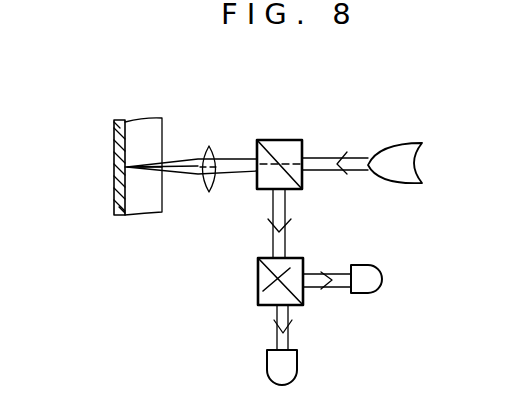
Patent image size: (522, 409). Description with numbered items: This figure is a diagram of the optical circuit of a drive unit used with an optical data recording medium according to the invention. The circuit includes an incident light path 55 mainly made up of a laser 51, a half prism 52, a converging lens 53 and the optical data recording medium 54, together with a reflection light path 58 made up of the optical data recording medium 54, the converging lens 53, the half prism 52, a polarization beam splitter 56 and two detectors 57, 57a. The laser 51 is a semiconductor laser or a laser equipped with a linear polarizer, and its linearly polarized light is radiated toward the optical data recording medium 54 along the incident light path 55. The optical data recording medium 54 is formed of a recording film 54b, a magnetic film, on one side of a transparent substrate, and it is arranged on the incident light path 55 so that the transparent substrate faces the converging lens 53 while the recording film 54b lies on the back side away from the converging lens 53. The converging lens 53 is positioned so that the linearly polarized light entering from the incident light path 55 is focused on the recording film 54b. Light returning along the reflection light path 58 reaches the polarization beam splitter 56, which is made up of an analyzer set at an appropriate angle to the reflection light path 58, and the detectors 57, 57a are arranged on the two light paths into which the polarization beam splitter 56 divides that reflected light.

The laser 51 is at (403, 150).
The half prism 52 is at (283, 140).
The converging lens 53 is at (209, 146).
The optical data recording medium 54 is at (142, 128).
The recording film 54b is at (113, 203).
The incident light path 55 is at (340, 152).
The polarization beam splitter 56 is at (258, 295).
The detector 57 is at (385, 278).
The detector 57a is at (292, 365).
The reflection light path 58 is at (288, 236).